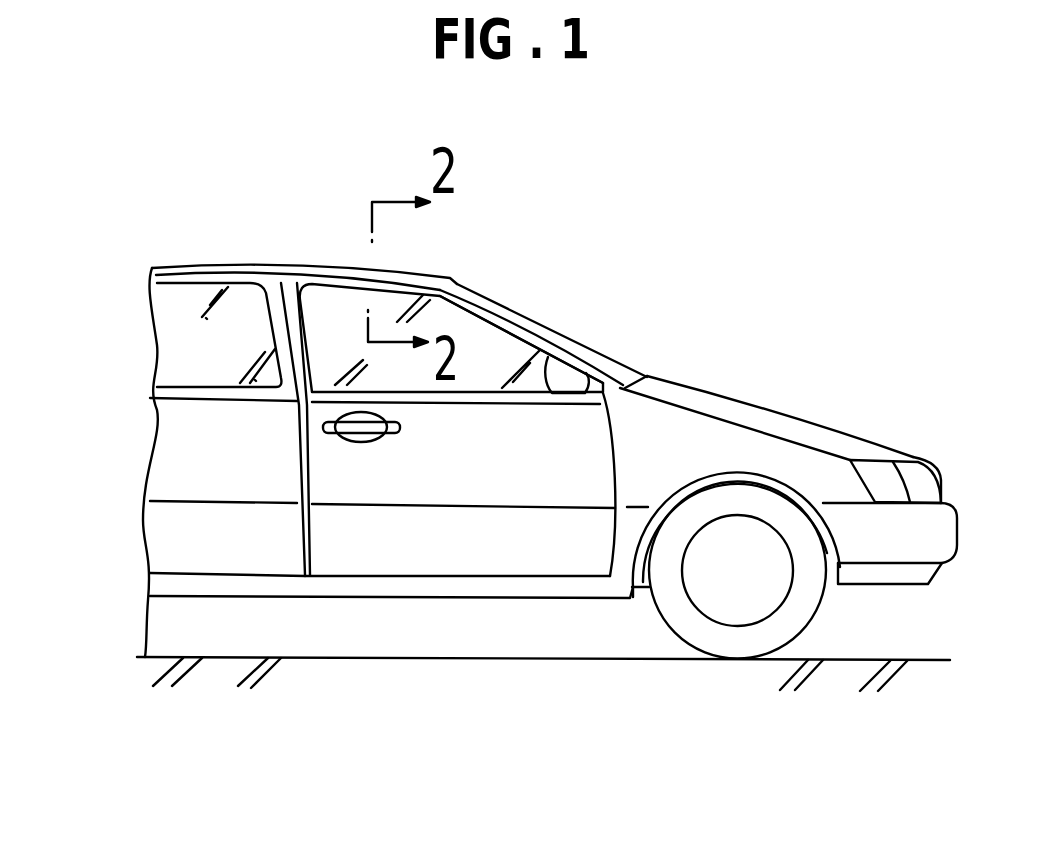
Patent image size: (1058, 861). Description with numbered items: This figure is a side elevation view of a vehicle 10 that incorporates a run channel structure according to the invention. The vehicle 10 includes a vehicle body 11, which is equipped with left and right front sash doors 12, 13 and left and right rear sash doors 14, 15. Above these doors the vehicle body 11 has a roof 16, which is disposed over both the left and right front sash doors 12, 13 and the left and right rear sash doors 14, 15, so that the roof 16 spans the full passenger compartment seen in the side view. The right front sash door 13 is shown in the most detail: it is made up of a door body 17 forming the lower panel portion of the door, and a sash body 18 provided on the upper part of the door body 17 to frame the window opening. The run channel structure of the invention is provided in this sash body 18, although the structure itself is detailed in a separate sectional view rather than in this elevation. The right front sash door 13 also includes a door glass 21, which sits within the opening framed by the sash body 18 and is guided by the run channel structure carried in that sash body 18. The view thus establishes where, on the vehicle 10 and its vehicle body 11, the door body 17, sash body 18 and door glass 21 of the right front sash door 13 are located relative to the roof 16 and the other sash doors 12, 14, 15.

The vehicle 10 is at (627, 338).
The vehicle body 11 is at (707, 425).
The left front sash door 12 is at (478, 540).
The right front sash door 13 is at (460, 576).
The left rear sash door 14 is at (195, 538).
The right rear sash door 15 is at (174, 513).
The roof 16 is at (215, 263).
The door body 17 is at (578, 547).
The sash body 18 is at (317, 270).
The door glass 21 is at (480, 332).